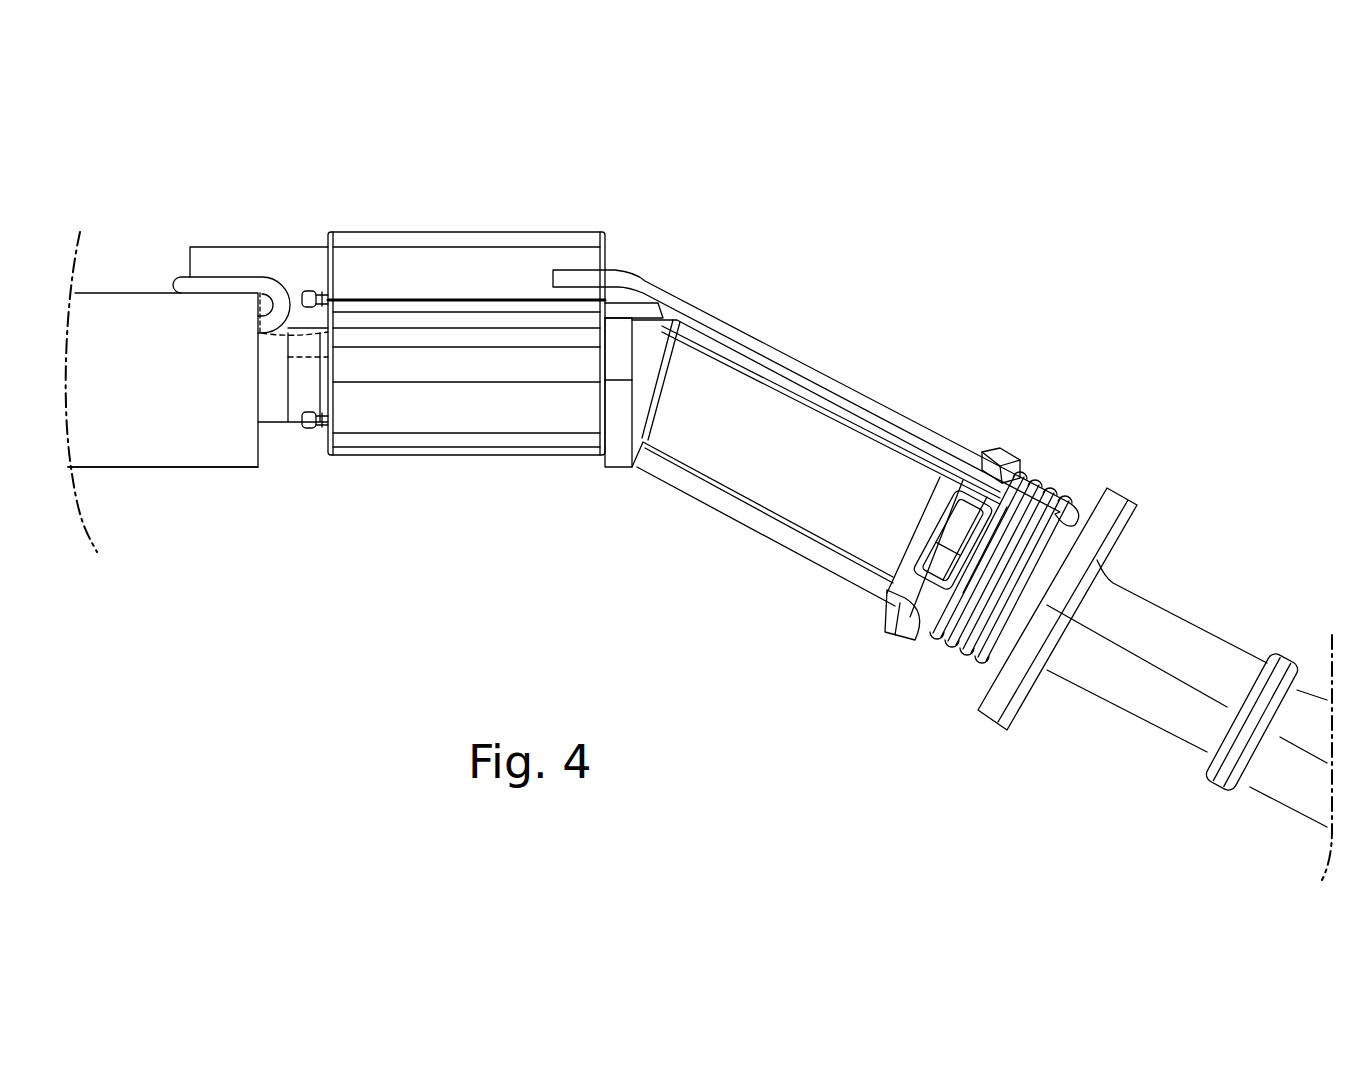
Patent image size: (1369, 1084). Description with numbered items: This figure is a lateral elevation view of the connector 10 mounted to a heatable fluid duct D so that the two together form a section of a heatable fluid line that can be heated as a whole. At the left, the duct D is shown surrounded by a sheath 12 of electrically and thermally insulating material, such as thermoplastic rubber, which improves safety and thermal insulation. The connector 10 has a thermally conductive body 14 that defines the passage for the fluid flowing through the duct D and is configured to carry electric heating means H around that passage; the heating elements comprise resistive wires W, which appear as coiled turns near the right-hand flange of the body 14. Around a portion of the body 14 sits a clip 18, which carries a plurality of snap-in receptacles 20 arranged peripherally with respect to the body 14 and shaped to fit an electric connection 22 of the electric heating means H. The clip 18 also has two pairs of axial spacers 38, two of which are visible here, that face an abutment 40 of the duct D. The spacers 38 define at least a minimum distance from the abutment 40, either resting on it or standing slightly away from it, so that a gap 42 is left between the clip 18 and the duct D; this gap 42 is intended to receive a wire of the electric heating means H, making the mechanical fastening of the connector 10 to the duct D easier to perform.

The connector 10 is at (998, 230).
The sheath 12 is at (216, 476).
The thermally conductive body 14 is at (760, 552).
The clip 18 is at (592, 224).
The snap-in receptacles 20 is at (432, 250).
The electric connection 22 is at (263, 262).
The axial spacers 38 is at (316, 291).
The abutment 40 is at (132, 320).
The gap 42 is at (259, 413).
The electric heating means H is at (209, 262).
The resistive wires W is at (1047, 468).
The heatable fluid duct D is at (153, 476).